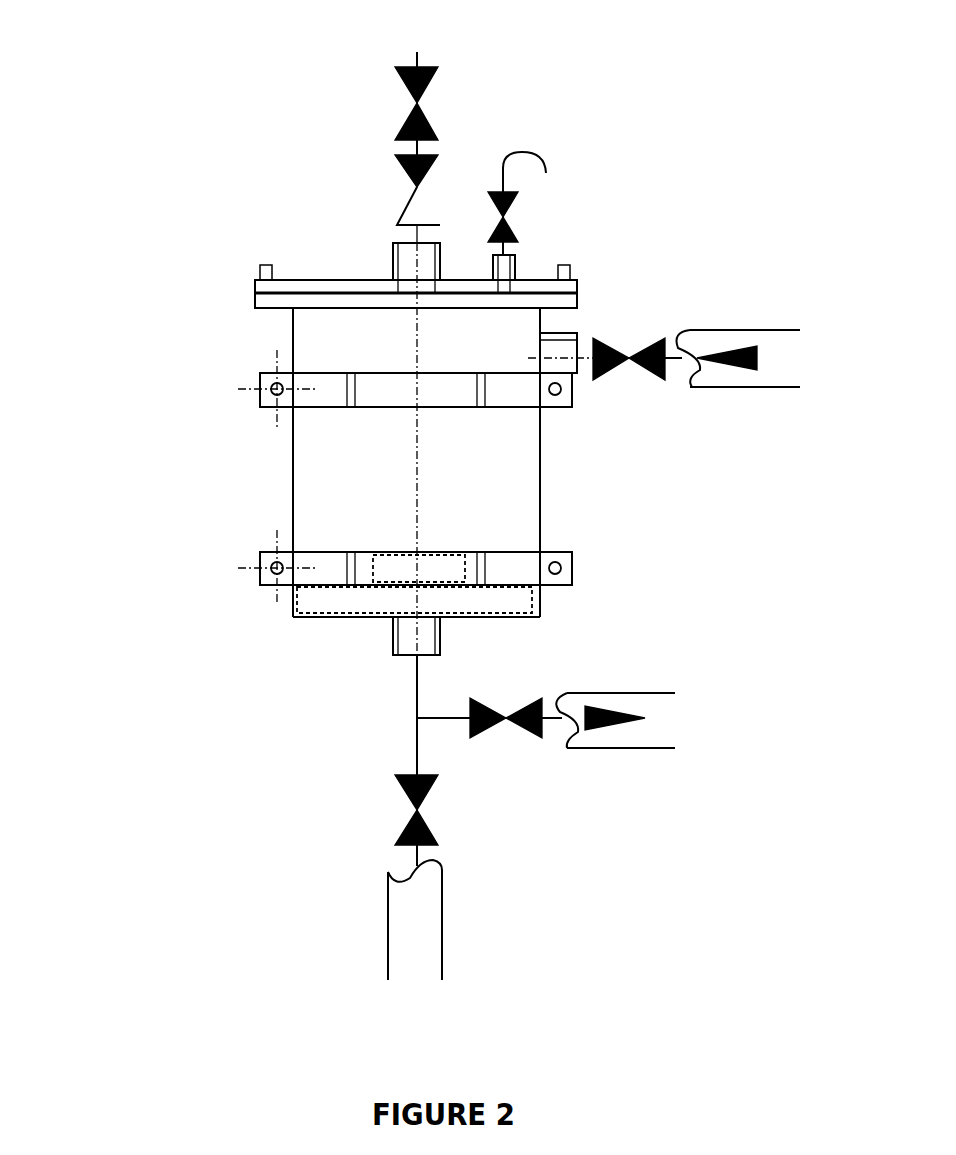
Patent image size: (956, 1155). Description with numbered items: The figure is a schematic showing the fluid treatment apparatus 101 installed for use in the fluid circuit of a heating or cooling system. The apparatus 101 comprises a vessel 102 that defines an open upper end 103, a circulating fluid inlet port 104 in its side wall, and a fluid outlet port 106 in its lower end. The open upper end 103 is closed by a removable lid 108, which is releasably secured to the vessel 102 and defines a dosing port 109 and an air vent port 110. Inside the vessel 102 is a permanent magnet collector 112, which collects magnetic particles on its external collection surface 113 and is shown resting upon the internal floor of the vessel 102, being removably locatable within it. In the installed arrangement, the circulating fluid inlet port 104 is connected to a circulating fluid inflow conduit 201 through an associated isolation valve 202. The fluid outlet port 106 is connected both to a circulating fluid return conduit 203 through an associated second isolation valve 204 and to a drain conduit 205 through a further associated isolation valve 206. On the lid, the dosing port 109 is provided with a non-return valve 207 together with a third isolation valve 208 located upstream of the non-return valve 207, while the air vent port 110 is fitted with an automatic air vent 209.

The fluid treatment apparatus 101 is at (215, 640).
The vessel 102 is at (525, 507).
The open upper end 103 is at (254, 287).
The circulating fluid inlet port 104 is at (580, 333).
The fluid outlet port 106 is at (393, 635).
The removable lid 108 is at (568, 275).
The dosing port 109 is at (393, 253).
The air vent port 110 is at (515, 257).
The permanent magnet collector 112 is at (525, 610).
The external collection surface 113 is at (354, 581).
The circulating fluid inflow conduit 201 is at (713, 340).
The isolation valve 202 is at (617, 370).
The circulating fluid return conduit 203 is at (590, 702).
The second isolation valve 204 is at (493, 727).
The drain conduit 205 is at (408, 930).
The isolation valve 206 is at (403, 832).
The non-return valve 207 is at (395, 168).
The third isolation valve 208 is at (395, 70).
The automatic air vent 209 is at (510, 210).